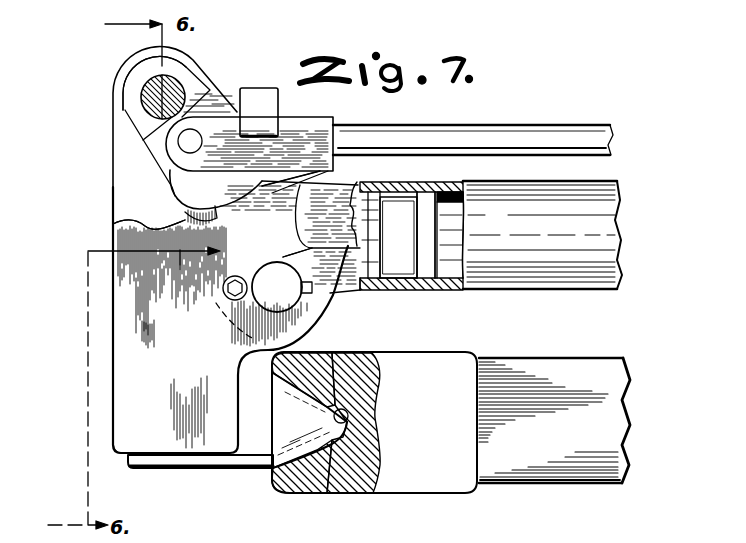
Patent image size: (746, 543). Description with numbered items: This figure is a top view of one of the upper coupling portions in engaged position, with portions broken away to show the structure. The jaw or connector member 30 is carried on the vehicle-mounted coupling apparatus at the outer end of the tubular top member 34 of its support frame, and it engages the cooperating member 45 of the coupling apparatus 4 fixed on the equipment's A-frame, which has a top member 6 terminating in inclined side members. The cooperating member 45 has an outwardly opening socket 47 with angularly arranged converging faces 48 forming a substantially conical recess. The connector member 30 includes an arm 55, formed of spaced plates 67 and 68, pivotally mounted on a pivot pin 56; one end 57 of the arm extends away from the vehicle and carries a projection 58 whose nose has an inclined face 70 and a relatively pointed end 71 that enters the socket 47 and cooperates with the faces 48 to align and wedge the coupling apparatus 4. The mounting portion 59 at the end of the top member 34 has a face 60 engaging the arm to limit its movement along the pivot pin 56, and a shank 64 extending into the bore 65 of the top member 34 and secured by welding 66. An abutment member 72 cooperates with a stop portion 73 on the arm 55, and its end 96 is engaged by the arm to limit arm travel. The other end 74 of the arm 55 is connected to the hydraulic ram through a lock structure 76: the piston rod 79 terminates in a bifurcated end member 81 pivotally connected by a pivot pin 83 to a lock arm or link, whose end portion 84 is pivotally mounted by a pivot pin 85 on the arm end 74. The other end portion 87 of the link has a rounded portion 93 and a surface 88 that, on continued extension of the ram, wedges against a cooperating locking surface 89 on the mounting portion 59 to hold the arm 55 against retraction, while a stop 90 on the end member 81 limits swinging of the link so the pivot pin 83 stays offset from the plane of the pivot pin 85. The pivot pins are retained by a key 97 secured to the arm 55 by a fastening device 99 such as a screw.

The coupling apparatus 4 is at (425, 343).
The top member 6 is at (600, 363).
The connector member 30 is at (200, 472).
The top member 34 is at (567, 260).
The cooperating member 45 is at (377, 357).
The socket 47 is at (338, 495).
The converging faces 48 is at (330, 398).
The arm 55 is at (128, 344).
The pivot pin 56 is at (275, 277).
The end 57 is at (115, 455).
The projection 58 is at (290, 440).
The mounting portion 59 is at (323, 185).
The face 60 is at (263, 213).
The shank 64 is at (407, 275).
The bore 65 is at (457, 275).
The welding 66 is at (360, 292).
The plate 67 is at (123, 388).
The plate 68 is at (123, 142).
The inclined face 70 is at (293, 495).
The pointed end 71 is at (346, 434).
The abutment member 72 is at (362, 185).
The stop portion 73 is at (372, 247).
The other end 74 is at (135, 57).
The lock structure 76 is at (180, 204).
The piston rod 79 is at (560, 133).
The bifurcated end member 81 is at (320, 117).
The pivot pin 83 is at (180, 144).
The end portion 84 is at (167, 47).
The pivot pin 85 is at (145, 98).
The other end portion 87 is at (270, 166).
The surface 88 is at (260, 184).
The locking surface 89 is at (277, 176).
The stop 90 is at (263, 88).
The rounded portion 93 is at (180, 270).
The end 96 is at (337, 250).
The key 97 is at (335, 294).
The fastening device 99 is at (222, 292).